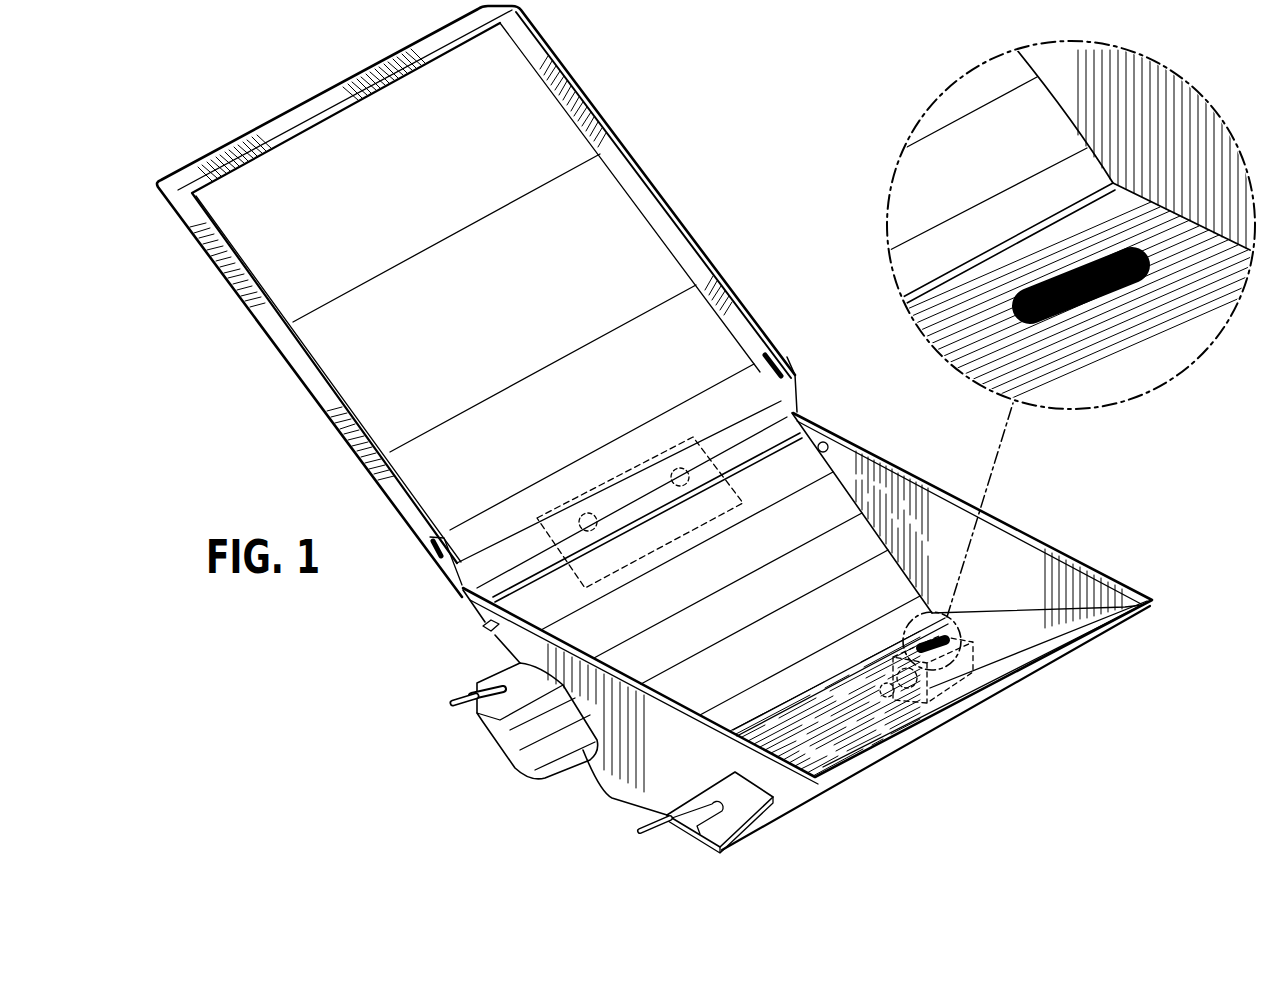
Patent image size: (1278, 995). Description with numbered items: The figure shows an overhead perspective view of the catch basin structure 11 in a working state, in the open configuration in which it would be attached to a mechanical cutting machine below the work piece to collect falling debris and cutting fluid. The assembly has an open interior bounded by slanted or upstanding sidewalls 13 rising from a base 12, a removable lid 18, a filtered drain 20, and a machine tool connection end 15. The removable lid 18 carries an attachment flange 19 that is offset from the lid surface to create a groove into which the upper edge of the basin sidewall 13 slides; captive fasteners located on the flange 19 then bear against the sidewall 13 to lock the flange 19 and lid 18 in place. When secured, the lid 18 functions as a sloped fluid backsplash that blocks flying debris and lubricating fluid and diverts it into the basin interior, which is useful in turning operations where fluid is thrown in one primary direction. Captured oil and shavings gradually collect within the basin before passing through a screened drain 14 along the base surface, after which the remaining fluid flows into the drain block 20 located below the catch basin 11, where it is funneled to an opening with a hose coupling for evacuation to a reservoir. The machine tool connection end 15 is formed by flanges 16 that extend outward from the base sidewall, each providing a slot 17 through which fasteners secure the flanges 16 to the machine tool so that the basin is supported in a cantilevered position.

The catch basin structure 11 is at (1101, 521).
The base 12 is at (857, 737).
The sidewalls 13 is at (1077, 590).
The screened drain 14 is at (1102, 242).
The machine tool connection end 15 is at (434, 756).
The flanges 16 is at (513, 667).
The slot 17 is at (456, 700).
The removable lid 18 is at (637, 227).
The attachment flange 19 is at (622, 475).
The drain block 20 is at (1005, 672).